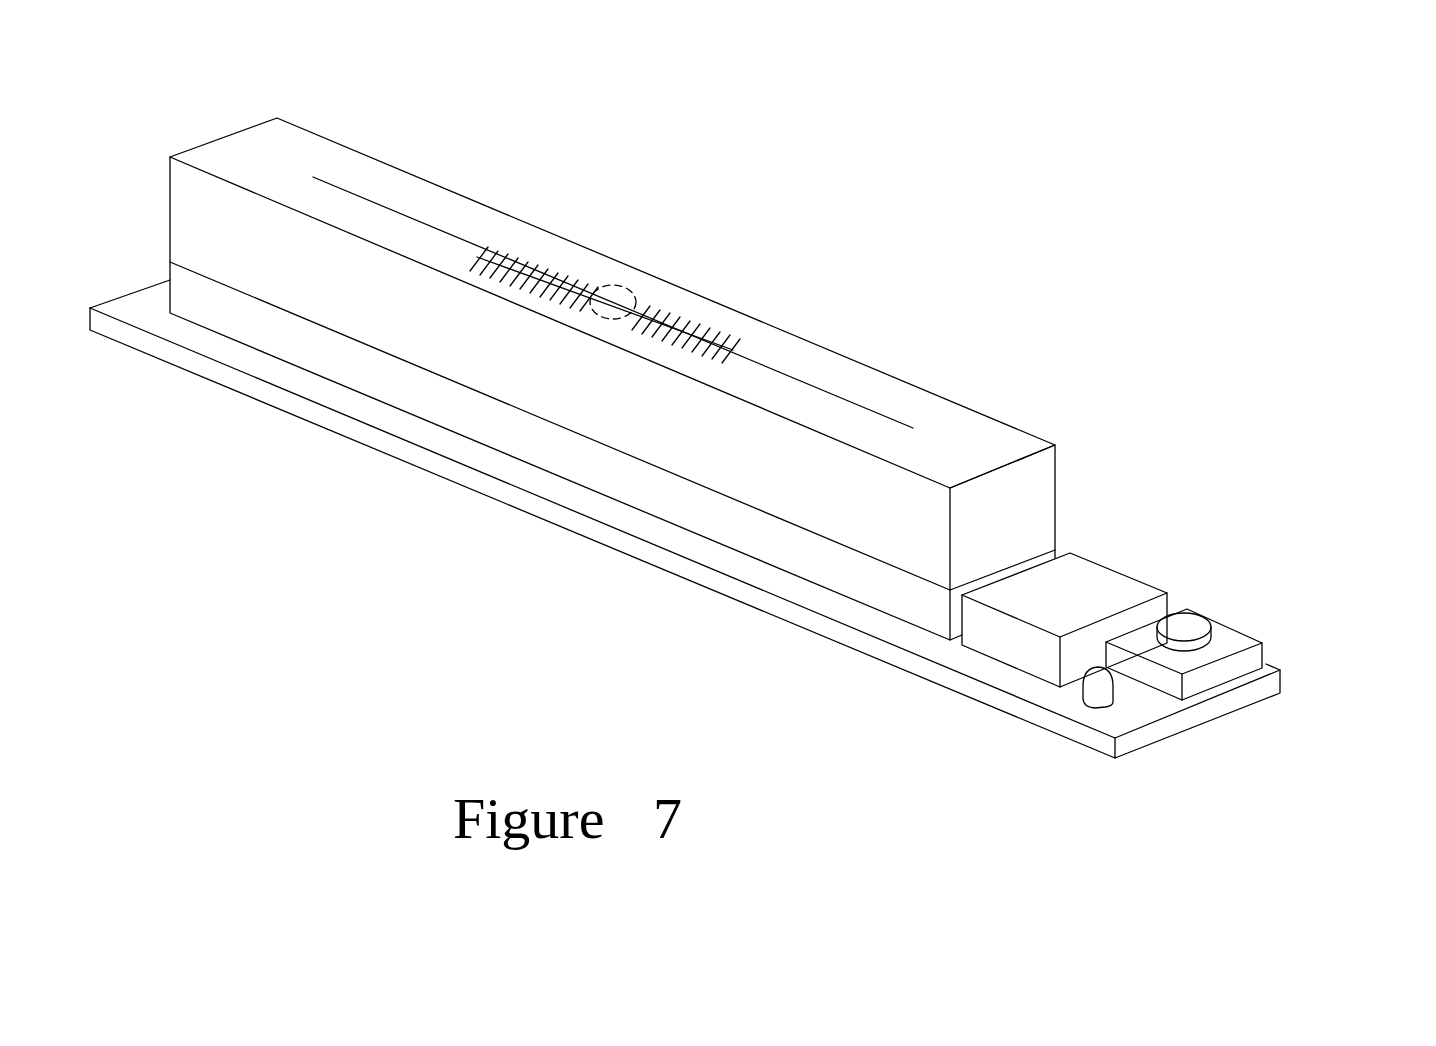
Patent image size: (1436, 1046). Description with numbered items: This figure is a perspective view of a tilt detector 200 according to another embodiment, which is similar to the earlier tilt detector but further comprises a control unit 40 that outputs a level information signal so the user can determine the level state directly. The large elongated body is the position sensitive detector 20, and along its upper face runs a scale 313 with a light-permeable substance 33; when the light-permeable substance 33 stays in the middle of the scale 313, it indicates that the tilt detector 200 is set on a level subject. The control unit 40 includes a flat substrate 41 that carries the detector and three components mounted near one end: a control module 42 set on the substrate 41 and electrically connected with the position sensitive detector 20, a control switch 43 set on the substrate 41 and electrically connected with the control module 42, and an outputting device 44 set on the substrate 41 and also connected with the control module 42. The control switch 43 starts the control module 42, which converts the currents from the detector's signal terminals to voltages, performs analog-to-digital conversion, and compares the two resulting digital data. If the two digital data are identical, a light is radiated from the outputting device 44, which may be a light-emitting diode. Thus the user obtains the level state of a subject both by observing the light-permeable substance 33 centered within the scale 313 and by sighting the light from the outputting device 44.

The tilt detector 200 is at (942, 248).
The position sensitive detector 20 is at (548, 445).
The light-permeable substance 33 is at (618, 288).
The scale 313 is at (727, 348).
The control unit 40 is at (1292, 467).
The substrate 41 is at (698, 572).
The control module 42 is at (1093, 590).
The control switch 43 is at (1233, 642).
The outputting device 44 is at (1098, 697).